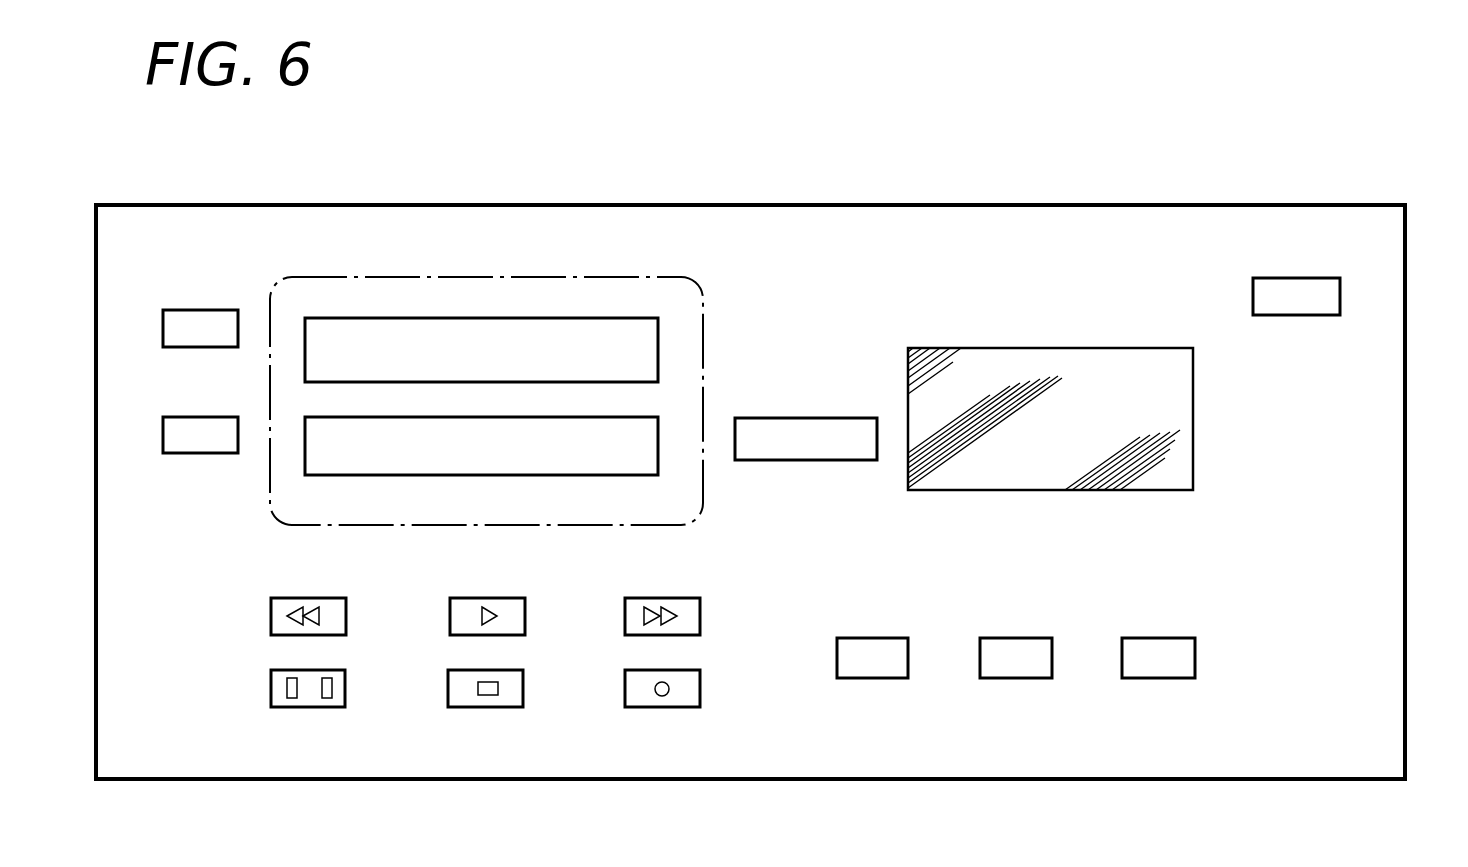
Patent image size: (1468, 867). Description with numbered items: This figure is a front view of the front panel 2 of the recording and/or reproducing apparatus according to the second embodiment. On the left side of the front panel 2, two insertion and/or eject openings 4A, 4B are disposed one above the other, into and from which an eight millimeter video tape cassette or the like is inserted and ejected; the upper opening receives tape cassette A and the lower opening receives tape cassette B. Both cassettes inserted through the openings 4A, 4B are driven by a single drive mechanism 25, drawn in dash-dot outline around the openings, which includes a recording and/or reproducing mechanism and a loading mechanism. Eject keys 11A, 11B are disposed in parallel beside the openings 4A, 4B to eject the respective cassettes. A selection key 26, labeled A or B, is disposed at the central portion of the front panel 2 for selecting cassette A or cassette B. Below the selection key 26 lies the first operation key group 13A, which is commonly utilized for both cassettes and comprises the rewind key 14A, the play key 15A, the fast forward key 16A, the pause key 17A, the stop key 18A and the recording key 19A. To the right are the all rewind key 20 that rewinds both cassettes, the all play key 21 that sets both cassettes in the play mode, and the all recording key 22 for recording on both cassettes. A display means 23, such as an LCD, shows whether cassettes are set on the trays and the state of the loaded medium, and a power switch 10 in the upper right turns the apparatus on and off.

The front panel 2 is at (1385, 490).
The insertion and/or eject opening 4A is at (637, 325).
The insertion and/or eject opening 4B is at (648, 430).
The power switch 10 is at (1293, 292).
The eject key 11A is at (207, 325).
The eject key 11B is at (232, 427).
The first operation key group 13A is at (712, 793).
The rewind key 14A is at (298, 597).
The play key 15A is at (478, 597).
The fast forward key 16A is at (657, 597).
The pause key 17A is at (315, 708).
The stop key 18A is at (490, 708).
The recording key 19A is at (667, 708).
The all rewind key 20 is at (876, 680).
The all play key 21 is at (1013, 680).
The all recording key 22 is at (1158, 680).
The display means 23 is at (1038, 372).
The drive mechanism 25 is at (557, 277).
The selection key 26 is at (775, 418).